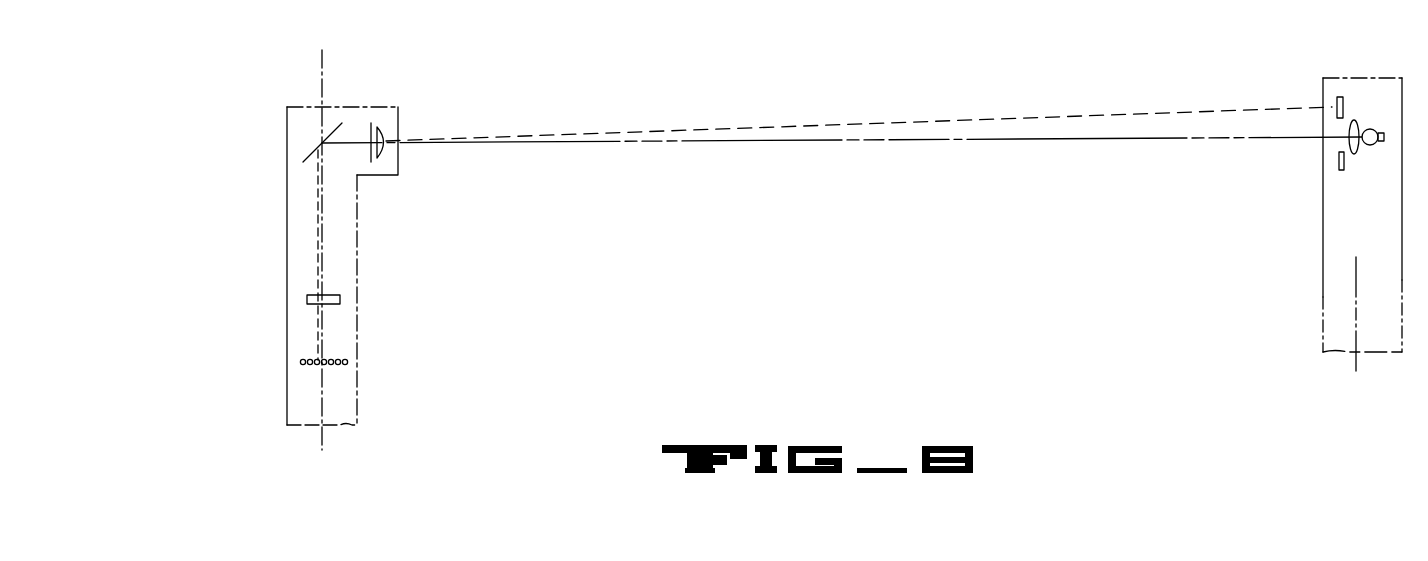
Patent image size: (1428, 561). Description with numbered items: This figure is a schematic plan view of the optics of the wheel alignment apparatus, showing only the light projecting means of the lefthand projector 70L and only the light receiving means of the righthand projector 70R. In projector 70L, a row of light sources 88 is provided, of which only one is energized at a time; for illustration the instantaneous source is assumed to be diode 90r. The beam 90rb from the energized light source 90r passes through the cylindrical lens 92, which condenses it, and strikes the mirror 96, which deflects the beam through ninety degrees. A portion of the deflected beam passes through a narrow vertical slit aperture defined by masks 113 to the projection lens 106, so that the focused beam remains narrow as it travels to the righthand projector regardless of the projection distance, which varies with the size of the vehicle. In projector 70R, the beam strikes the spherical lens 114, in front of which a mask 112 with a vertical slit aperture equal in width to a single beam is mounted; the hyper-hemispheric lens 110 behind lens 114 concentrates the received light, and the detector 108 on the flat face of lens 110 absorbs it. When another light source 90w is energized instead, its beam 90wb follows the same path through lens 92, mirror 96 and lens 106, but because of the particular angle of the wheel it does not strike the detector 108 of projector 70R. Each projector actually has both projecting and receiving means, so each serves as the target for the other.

The projector 70L is at (270, 244).
The projector 70R is at (1311, 252).
The light source array 88 is at (288, 348).
The light source 90w is at (318, 366).
The diode 90r is at (327, 366).
The beam 90wb is at (843, 125).
The beam 90rb is at (842, 140).
The cylindrical lens 92 is at (340, 299).
The mirror 96 is at (318, 143).
The projection lens 106 is at (383, 157).
The detector 108 is at (1384, 136).
The hyper-hemispheric lens 110 is at (1373, 129).
The mask 112 is at (1345, 158).
The masks 113 is at (371, 123).
The spherical lens 114 is at (1348, 120).